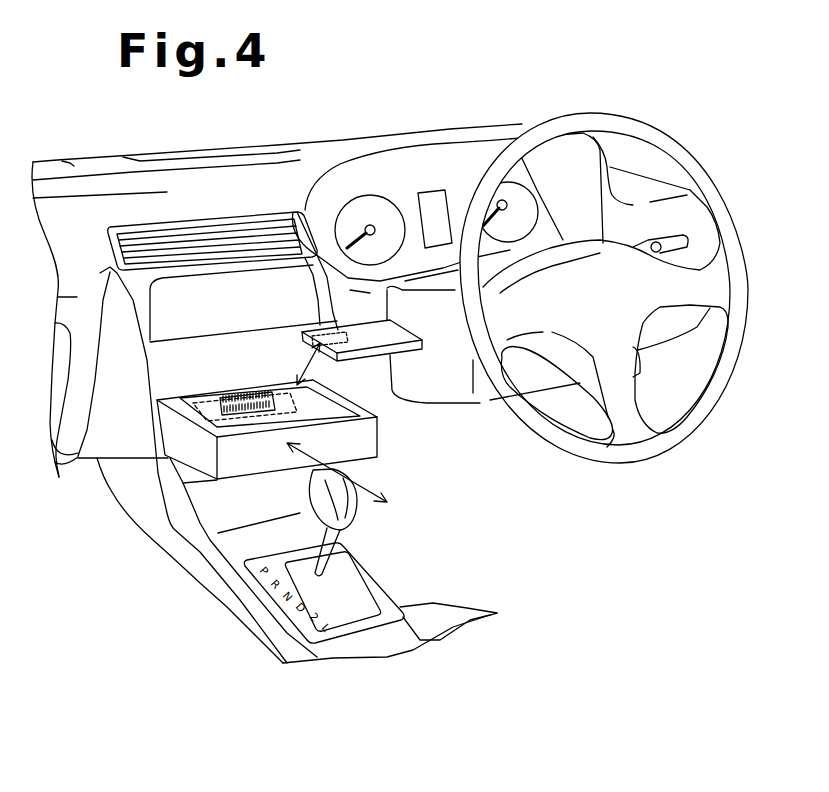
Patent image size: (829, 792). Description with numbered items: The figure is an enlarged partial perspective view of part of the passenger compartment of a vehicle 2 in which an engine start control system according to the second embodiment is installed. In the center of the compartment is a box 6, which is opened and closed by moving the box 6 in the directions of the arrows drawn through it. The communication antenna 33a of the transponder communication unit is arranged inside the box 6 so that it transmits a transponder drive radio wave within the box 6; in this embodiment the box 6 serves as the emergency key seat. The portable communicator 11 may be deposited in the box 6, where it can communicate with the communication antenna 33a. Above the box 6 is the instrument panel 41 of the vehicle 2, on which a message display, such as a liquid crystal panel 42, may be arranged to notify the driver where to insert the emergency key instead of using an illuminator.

The vehicle 2 is at (576, 87).
The instrument panel 41 is at (390, 182).
The display 42 is at (443, 177).
The portable communicator 11 is at (420, 349).
The box 6 is at (378, 452).
The communication antenna 33a is at (244, 387).